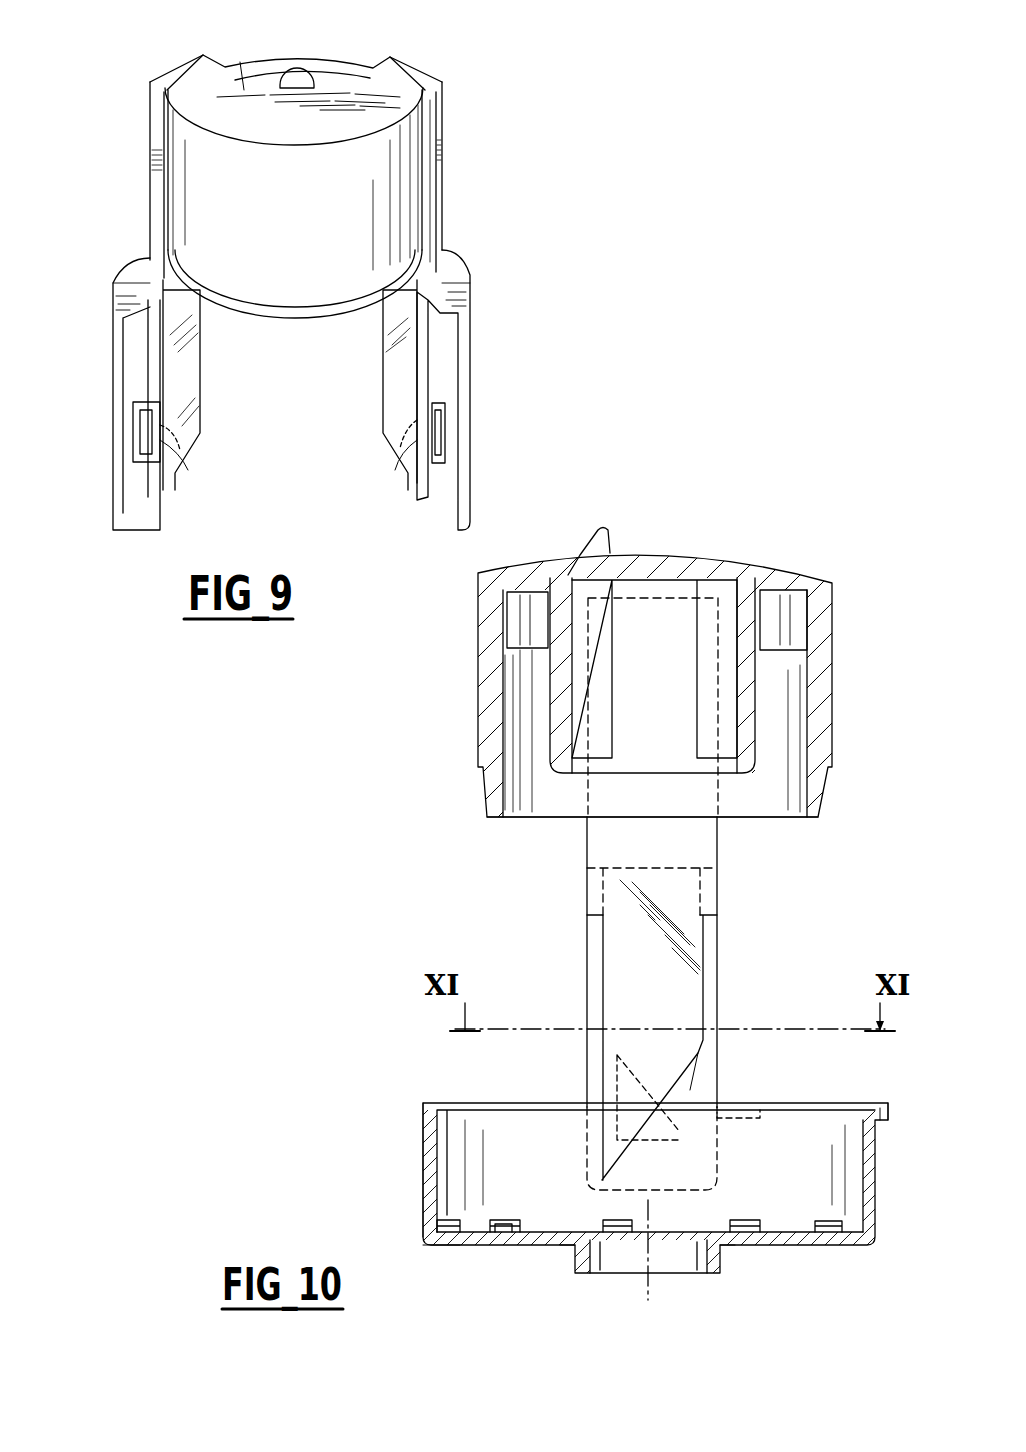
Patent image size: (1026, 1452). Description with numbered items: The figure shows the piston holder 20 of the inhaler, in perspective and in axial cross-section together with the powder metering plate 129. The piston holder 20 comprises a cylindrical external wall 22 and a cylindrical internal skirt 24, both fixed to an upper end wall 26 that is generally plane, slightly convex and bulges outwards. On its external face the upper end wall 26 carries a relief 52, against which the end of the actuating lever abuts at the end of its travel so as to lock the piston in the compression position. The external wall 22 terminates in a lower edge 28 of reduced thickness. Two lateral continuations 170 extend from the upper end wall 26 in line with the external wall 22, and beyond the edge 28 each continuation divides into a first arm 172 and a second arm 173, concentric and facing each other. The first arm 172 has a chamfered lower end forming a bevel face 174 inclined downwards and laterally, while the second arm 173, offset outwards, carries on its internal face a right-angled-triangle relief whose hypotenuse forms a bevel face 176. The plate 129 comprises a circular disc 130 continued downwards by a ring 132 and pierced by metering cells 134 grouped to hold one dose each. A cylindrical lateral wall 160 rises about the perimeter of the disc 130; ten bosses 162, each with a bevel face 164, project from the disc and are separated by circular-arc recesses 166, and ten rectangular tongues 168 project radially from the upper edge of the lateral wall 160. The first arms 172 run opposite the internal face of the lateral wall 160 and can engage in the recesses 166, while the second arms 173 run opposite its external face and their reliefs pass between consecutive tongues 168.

In FIG. 9, the piston holder 20 is at (398, 80).
In FIG. 10, the piston holder 20 is at (678, 557).
In FIG. 9, the external wall 22 is at (388, 230).
In FIG. 10, the external wall 22 is at (820, 668).
In FIG. 10, the internal skirt 24 is at (560, 660).
In FIG. 9, the upper end wall 26 is at (245, 88).
In FIG. 10, the upper end wall 26 is at (548, 578).
In FIG. 9, the edge 28 is at (283, 302).
In FIG. 10, the edge 28 is at (488, 788).
In FIG. 9, the relief 52 is at (305, 80).
In FIG. 10, the relief 52 is at (603, 542).
In FIG. 10, the plate 129 is at (413, 1197).
In FIG. 10, the circular disc 130 is at (505, 1247).
In FIG. 10, the ring 132 is at (630, 1258).
In FIG. 10, the cells 134 is at (533, 1245).
In FIG. 10, the cylindrical lateral wall 160 is at (430, 1150).
In FIG. 10, the bosses 162 is at (745, 1248).
In FIG. 10, the bevel face 164 is at (612, 1224).
In FIG. 10, the recesses 166 is at (447, 1242).
In FIG. 10, the tongues 168 is at (880, 1120).
In FIG. 9, the lateral continuations 170 is at (150, 197).
In FIG. 9, the first arm 172 is at (397, 357).
In FIG. 10, the first arm 172 is at (630, 965).
In FIG. 9, the second arm 173 is at (113, 355).
In FIG. 10, the second arm 173 is at (718, 975).
In FIG. 9, the bevel face 174 is at (192, 450).
In FIG. 10, the bevel face 174 is at (690, 1090).
In FIG. 9, the bevel face 176 is at (168, 415).
In FIG. 10, the bevel face 176 is at (645, 1075).